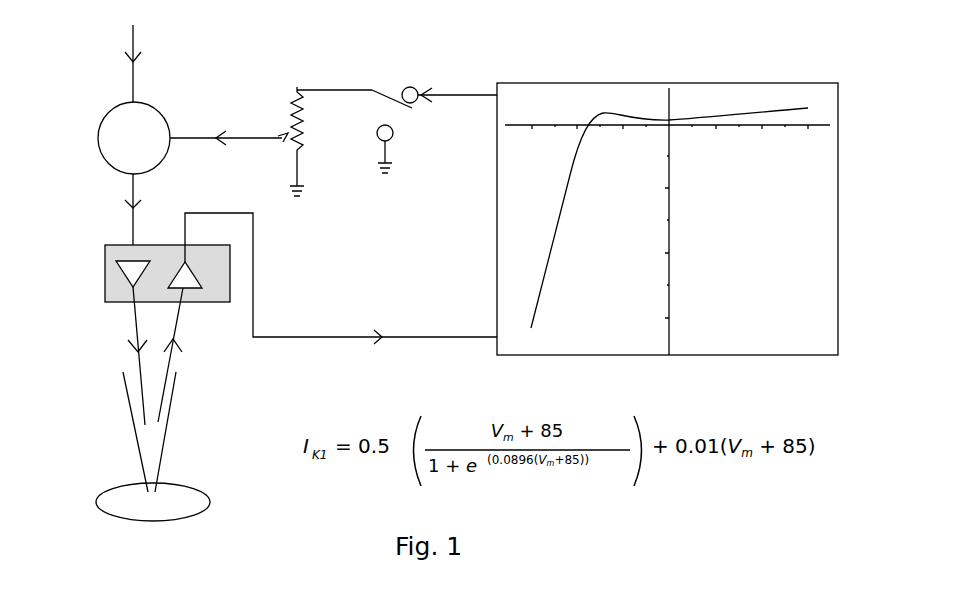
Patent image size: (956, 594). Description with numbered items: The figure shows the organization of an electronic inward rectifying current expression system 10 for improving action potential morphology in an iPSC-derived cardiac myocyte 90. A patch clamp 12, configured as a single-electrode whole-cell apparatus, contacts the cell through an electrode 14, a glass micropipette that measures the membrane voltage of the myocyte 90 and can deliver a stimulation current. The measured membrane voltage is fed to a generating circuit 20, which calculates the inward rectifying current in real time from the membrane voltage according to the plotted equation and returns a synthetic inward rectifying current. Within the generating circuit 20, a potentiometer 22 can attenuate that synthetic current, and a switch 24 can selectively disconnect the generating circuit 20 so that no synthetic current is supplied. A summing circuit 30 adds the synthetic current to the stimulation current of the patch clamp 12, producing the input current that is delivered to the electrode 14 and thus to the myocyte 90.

The system 10 is at (58, 34).
The patch clamp 12 is at (80, 212).
The electrode 14 is at (165, 450).
The generating circuit 20 is at (320, 65).
The potentiometer 22 is at (290, 114).
The switch 24 is at (386, 90).
The summing circuit 30 is at (156, 108).
The cardiac myocyte 90 is at (209, 494).